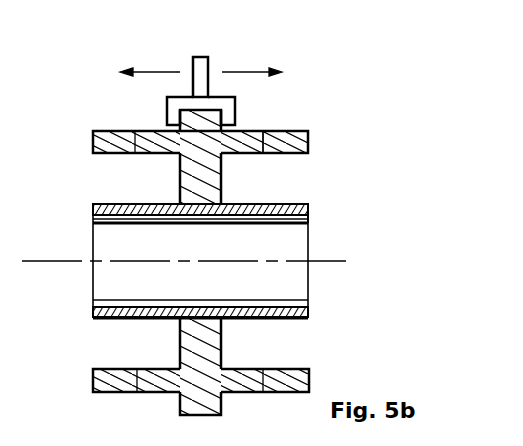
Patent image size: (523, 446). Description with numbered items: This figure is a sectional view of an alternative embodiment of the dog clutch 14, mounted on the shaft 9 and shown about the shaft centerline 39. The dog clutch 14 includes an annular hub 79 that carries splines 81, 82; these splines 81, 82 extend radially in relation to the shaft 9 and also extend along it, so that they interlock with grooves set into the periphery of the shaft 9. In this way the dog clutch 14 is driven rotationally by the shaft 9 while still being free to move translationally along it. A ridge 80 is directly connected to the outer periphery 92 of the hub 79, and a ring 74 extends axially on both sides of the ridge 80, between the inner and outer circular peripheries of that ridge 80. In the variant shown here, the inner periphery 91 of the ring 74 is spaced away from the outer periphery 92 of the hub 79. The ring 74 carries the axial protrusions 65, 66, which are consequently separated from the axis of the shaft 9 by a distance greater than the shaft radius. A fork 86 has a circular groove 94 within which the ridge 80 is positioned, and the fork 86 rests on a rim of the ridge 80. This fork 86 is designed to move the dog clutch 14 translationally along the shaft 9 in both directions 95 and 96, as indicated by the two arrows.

The dog clutch 14 is at (92, 107).
The direction 95 is at (158, 72).
The direction 96 is at (241, 72).
The circular groove 94 is at (172, 108).
The fork 86 is at (232, 110).
The axial protrusion 65 is at (290, 131).
The axial protrusion 66 is at (92, 138).
The inner periphery 91 is at (292, 143).
The ring 74 is at (158, 143).
The ridge 80 is at (213, 168).
The outer periphery 92 is at (270, 205).
The spline 81 is at (96, 219).
The annular hub 79 is at (308, 213).
The axis 39 is at (10, 260).
The shaft 9 is at (303, 282).
The spline 82 is at (93, 301).